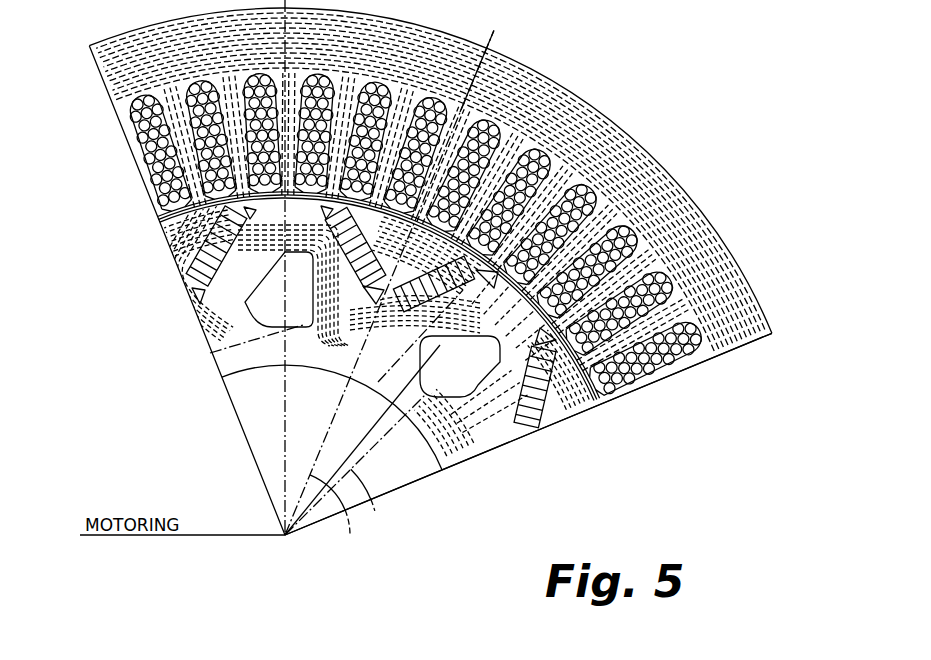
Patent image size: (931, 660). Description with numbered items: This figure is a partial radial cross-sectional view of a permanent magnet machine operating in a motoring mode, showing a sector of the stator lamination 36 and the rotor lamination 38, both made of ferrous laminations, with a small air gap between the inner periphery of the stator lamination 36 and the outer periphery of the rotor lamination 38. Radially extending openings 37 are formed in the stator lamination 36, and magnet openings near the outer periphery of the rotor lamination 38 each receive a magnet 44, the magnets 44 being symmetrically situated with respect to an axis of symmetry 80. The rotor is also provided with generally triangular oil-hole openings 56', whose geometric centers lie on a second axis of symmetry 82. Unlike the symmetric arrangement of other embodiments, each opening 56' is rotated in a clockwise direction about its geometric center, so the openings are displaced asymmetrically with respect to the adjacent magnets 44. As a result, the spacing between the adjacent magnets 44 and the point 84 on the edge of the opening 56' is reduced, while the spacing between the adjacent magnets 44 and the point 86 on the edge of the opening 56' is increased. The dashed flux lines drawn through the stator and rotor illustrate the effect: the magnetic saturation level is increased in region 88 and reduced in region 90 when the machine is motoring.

The stator lamination 36 is at (703, 205).
The radially extending openings 37 is at (547, 163).
The rotor lamination 38 is at (446, 475).
The magnet 44 is at (596, 405).
The generally triangular openings 56' is at (315, 332).
The axis of symmetry 80 is at (352, 538).
The axis of symmetry 82 is at (376, 512).
The point 84 is at (513, 382).
The point 86 is at (381, 421).
The region 88 is at (541, 425).
The region 90 is at (500, 430).